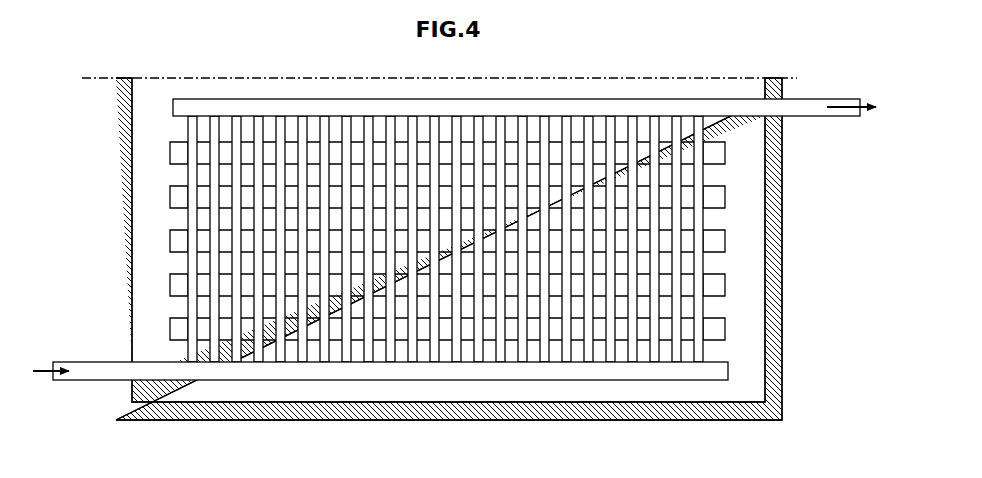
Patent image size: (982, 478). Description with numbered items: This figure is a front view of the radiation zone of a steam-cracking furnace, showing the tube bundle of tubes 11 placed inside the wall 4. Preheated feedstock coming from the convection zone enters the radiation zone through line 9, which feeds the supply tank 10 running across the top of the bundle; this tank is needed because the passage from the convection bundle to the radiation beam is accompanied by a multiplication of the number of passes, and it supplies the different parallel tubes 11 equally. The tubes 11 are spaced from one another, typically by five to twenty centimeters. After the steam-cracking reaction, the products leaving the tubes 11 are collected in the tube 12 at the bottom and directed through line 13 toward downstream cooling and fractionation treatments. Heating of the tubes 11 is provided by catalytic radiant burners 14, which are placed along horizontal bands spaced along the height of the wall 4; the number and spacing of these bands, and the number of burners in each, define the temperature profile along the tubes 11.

The wall 4 is at (792, 400).
The line 9 is at (858, 99).
The supply tank 10 is at (600, 107).
The tubes 11 is at (345, 135).
The tube 12 is at (585, 371).
The line 13 is at (73, 383).
The catalytic radiant burners 14 is at (724, 155).